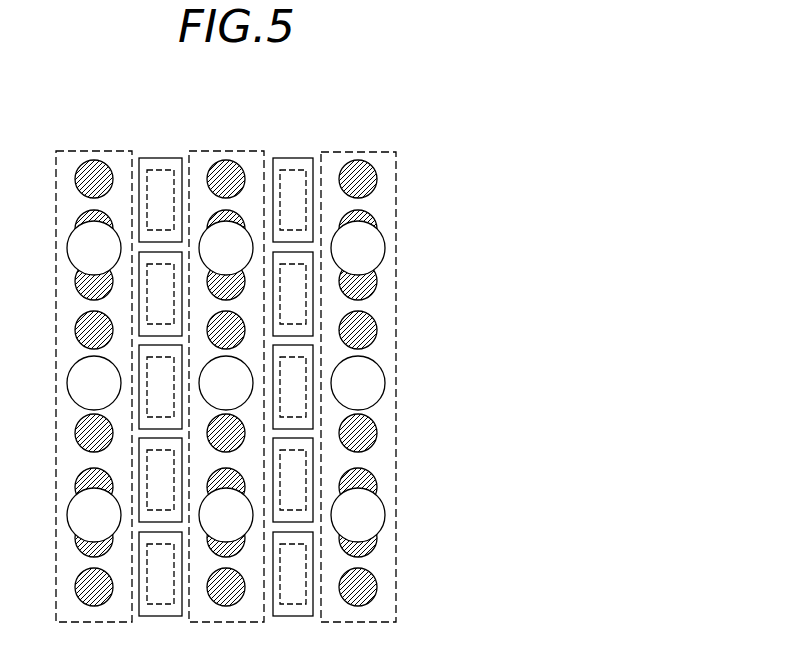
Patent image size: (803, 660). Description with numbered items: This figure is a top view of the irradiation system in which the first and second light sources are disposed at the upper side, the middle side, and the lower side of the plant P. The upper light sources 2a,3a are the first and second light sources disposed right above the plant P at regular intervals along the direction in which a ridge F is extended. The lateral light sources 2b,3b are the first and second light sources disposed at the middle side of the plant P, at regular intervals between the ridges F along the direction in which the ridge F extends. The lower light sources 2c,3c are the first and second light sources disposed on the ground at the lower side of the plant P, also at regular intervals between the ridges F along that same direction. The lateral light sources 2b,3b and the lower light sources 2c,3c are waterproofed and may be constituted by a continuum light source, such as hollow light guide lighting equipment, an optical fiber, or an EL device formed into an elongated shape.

The lateral light sources 2b,3b is at (280, 161).
The lower light sources 2c,3c is at (295, 172).
The plant P is at (378, 173).
The upper light sources 2a,3a is at (378, 247).
The ridge F is at (397, 347).